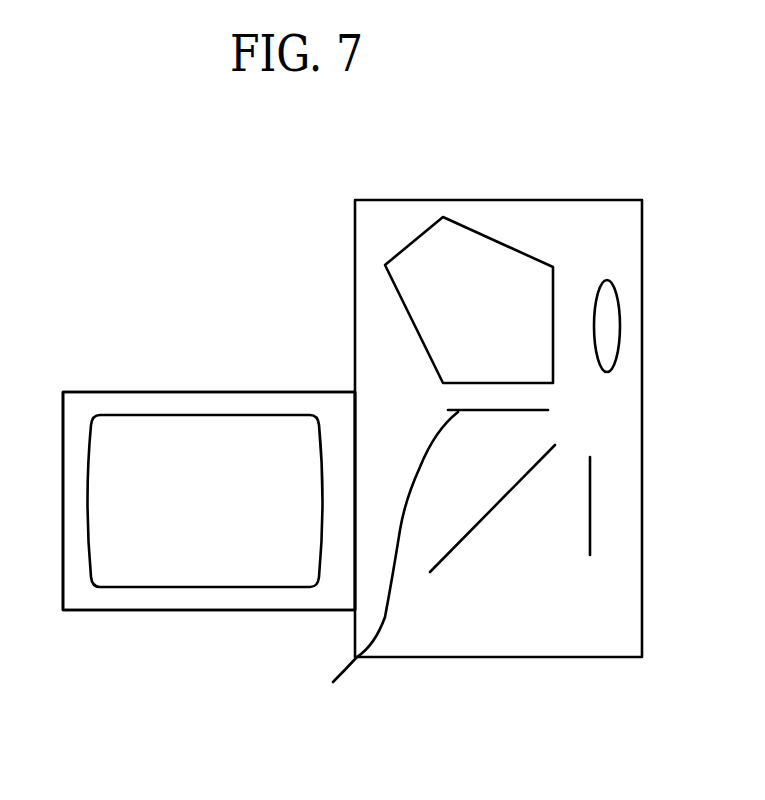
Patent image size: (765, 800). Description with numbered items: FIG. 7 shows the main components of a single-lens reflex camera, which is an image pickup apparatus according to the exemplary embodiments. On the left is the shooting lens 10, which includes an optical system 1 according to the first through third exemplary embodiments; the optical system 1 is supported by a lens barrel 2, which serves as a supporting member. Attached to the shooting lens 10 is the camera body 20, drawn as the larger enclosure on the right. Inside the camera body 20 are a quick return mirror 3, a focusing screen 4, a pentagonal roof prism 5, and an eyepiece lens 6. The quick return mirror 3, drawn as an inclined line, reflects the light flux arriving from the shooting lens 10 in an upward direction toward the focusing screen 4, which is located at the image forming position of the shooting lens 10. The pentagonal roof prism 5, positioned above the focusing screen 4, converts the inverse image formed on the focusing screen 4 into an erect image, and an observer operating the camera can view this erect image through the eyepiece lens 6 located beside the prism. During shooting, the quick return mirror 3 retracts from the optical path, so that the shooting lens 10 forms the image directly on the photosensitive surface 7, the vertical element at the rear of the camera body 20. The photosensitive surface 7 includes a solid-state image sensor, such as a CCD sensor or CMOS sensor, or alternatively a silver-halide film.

The optical system 1 is at (157, 415).
The lens barrel 2 is at (215, 611).
The quick return mirror 3 is at (467, 535).
The focusing screen 4 is at (430, 558).
The pentagonal roof prism 5 is at (415, 237).
The eyepiece lens 6 is at (621, 324).
The photosensitive surface 7 is at (590, 507).
The shooting lens 10 is at (252, 392).
The camera body 20 is at (497, 198).